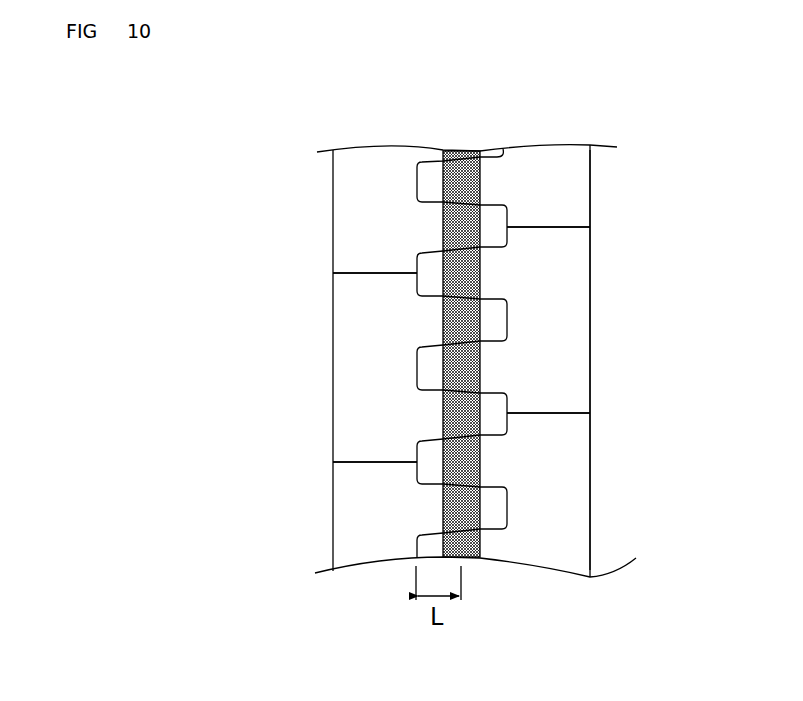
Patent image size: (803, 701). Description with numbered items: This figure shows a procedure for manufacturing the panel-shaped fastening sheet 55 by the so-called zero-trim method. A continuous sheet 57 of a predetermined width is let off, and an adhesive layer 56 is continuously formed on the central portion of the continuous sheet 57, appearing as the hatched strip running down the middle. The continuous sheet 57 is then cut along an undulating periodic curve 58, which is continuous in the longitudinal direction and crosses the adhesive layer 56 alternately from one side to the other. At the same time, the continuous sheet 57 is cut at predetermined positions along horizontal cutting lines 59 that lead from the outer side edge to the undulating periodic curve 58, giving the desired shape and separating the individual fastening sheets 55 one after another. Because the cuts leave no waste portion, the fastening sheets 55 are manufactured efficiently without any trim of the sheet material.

The fastening sheet 55 is at (594, 314).
The adhesive layer 56 is at (480, 373).
The continuous sheet 57 is at (596, 220).
The undulating periodic curve 58 is at (507, 320).
The horizontal cutting line 59 is at (368, 272).